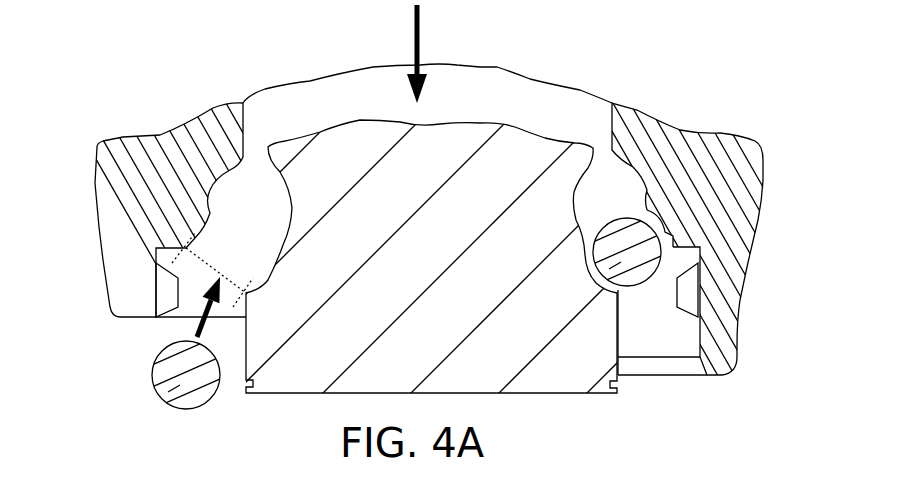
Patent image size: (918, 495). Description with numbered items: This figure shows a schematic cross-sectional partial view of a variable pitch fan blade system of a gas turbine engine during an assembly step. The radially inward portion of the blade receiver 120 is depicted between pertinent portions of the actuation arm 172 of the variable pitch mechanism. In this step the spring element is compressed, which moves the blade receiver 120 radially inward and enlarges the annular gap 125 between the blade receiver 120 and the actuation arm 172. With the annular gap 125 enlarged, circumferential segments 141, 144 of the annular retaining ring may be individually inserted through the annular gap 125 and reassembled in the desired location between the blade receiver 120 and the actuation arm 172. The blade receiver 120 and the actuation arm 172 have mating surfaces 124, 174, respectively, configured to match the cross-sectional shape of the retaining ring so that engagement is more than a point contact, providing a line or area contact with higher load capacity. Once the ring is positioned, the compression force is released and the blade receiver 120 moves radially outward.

The blade receiver 120 is at (538, 377).
The mating surface 124 is at (617, 290).
The annular gap 125 is at (205, 263).
The circumferential segment 141 is at (163, 401).
The circumferential segment 144 is at (622, 238).
The actuation arm 172 is at (120, 215).
The mating surface 174 is at (668, 234).